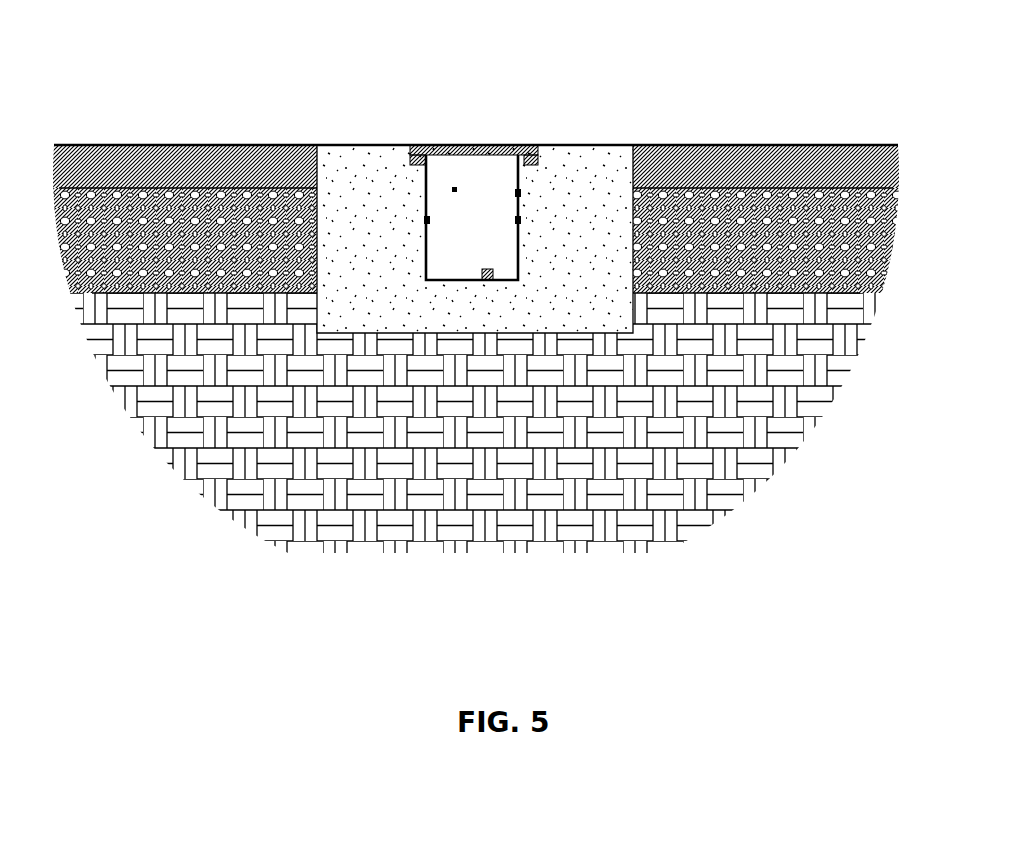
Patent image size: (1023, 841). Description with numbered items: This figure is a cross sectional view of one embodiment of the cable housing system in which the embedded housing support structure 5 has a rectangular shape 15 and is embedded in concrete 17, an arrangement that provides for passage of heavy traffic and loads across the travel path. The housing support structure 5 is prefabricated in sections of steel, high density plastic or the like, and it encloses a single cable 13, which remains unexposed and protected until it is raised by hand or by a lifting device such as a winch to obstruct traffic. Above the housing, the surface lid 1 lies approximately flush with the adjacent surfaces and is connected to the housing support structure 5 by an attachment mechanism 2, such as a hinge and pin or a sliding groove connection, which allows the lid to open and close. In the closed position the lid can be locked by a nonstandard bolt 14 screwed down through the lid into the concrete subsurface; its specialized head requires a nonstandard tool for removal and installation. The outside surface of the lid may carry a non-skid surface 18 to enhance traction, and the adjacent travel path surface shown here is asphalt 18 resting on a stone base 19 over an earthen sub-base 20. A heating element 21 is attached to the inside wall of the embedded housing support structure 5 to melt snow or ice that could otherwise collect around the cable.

The surface lid 1 is at (462, 143).
The attachment mechanism 2 is at (532, 153).
The embedded housing support structure 5 is at (427, 220).
The single cable 13 is at (483, 273).
The nonstandard bolt 14 is at (419, 163).
The rectangular shape 15 is at (520, 193).
The concrete 17 is at (577, 287).
The asphalt 18 is at (868, 168).
The stone base 19 is at (827, 255).
The earthen sub-base 20 is at (753, 363).
The heating element 21 is at (517, 220).